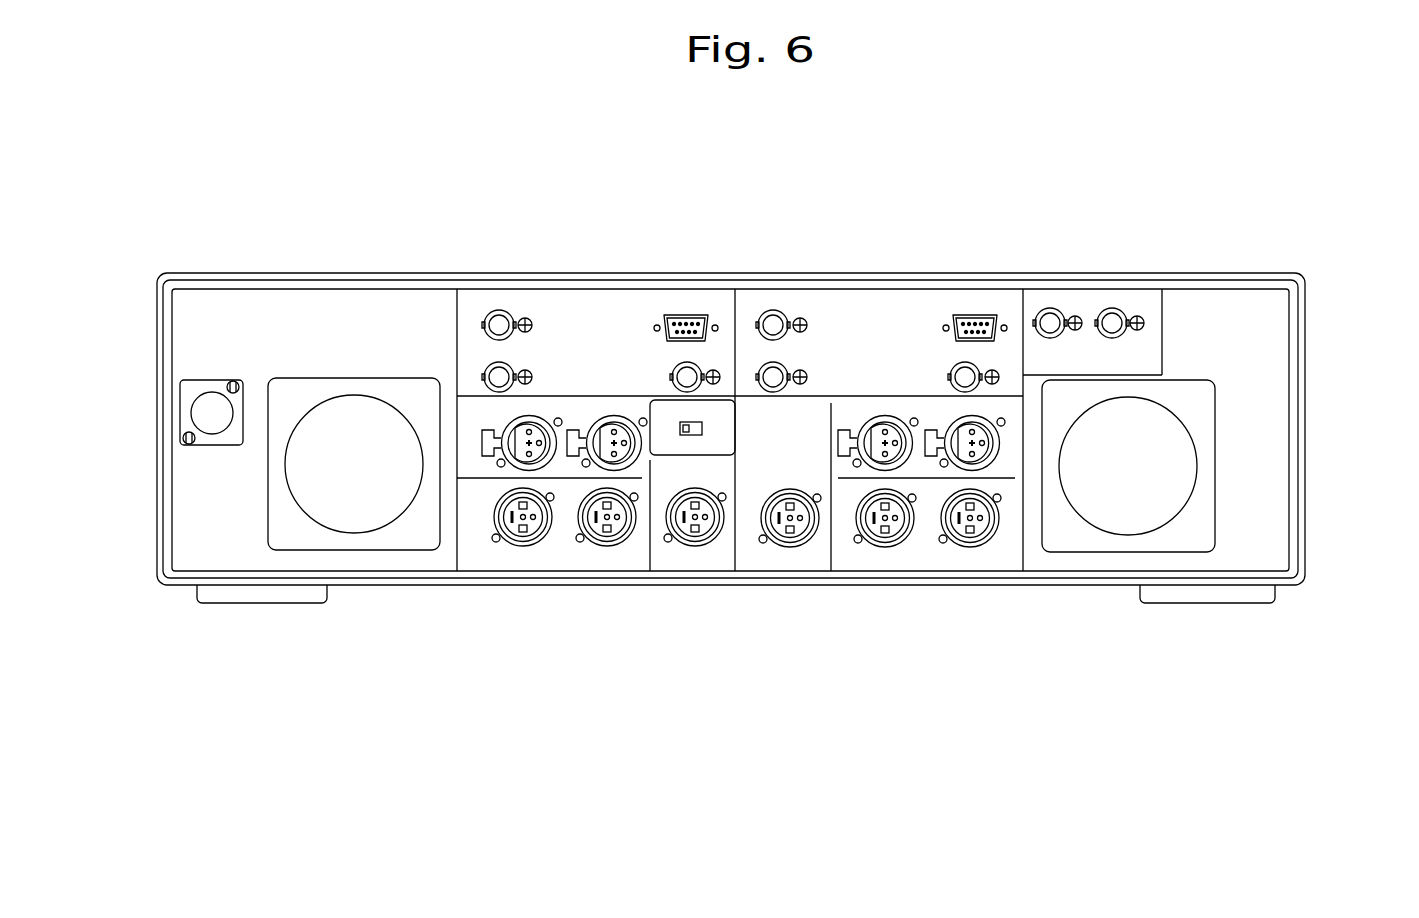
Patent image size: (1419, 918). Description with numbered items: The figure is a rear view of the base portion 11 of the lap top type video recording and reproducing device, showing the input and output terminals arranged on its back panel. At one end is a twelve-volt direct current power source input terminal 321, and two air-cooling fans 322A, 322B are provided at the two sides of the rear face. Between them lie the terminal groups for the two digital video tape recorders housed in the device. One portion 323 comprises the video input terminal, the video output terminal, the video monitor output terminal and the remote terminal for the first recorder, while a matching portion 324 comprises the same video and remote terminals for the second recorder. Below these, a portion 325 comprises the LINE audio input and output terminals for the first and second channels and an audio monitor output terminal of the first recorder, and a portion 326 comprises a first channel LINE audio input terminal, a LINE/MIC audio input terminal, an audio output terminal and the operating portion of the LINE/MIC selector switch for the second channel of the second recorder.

The base portion 11 is at (290, 273).
The 12 V direct current power source input terminal 321 is at (180, 395).
The air-cooling fan 322A is at (1215, 492).
The air-cooling fan 322B is at (350, 550).
The video terminal portion for the first digital video tape recorder 323 is at (883, 335).
The video terminal portion for the second digital video tape recorder 324 is at (605, 335).
The audio terminal portion for the first digital video tape recorder 325 is at (995, 552).
The audio terminal portion for the second digital video tape recorder 326 is at (632, 552).